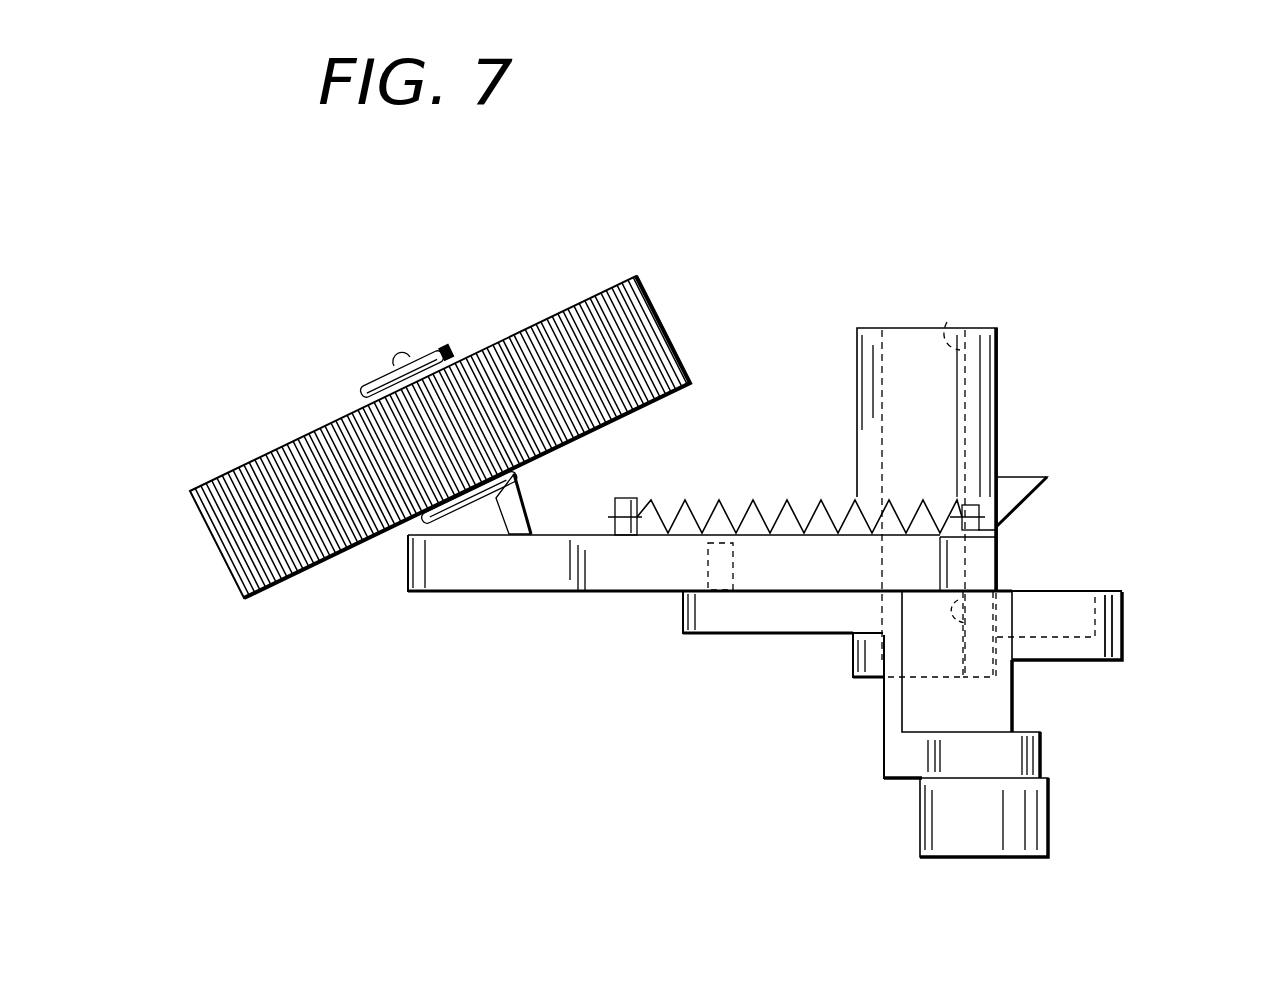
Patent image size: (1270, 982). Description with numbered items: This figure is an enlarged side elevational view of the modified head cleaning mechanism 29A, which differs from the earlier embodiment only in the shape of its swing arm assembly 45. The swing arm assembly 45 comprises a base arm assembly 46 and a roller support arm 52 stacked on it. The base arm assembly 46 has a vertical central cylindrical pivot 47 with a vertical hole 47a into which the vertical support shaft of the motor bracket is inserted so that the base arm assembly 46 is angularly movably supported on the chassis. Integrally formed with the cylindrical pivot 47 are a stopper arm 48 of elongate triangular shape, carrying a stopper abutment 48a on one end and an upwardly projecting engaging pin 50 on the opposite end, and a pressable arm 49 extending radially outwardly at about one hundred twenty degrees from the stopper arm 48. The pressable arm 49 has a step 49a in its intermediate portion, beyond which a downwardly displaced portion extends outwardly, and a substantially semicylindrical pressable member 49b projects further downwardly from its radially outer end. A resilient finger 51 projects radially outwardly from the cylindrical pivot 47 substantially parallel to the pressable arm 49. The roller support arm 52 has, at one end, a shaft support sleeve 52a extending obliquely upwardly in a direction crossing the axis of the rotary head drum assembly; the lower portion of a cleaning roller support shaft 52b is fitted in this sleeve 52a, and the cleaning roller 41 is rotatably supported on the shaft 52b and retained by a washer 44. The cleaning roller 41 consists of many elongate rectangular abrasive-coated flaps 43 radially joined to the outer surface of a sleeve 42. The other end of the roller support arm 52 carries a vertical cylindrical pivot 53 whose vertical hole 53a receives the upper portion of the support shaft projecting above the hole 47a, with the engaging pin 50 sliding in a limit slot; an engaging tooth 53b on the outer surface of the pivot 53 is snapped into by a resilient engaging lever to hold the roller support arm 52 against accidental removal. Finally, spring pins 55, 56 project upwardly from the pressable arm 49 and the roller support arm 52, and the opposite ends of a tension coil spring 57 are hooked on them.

The head cleaning mechanism 29A is at (783, 249).
The cleaning roller 41 is at (590, 293).
The sleeve 42 is at (449, 352).
The flaps 43 is at (628, 355).
The washer 44 is at (368, 396).
The swing arm assembly 45 is at (750, 460).
The base arm assembly 46 is at (752, 636).
The vertical central cylindrical pivot 47 is at (862, 680).
The vertical hole 47a is at (1003, 573).
The stopper arm 48 is at (1074, 640).
The stopper abutment 48a is at (1075, 612).
The pressable arm 49 is at (1000, 696).
The step 49a is at (922, 702).
The pressable member 49b is at (1035, 826).
The engaging pin 50 is at (702, 566).
The resilient finger 51 is at (1124, 638).
The roller support arm 52 is at (570, 593).
The shaft support sleeve 52a is at (522, 500).
The cleaning roller support shaft 52b is at (403, 350).
The vertical cylindrical pivot 53 is at (1000, 391).
The vertical hole 53a is at (947, 322).
The engaging tooth 53b is at (1026, 478).
The spring pin 55 is at (1000, 526).
The spring pin 56 is at (631, 498).
The tension coil spring 57 is at (789, 501).